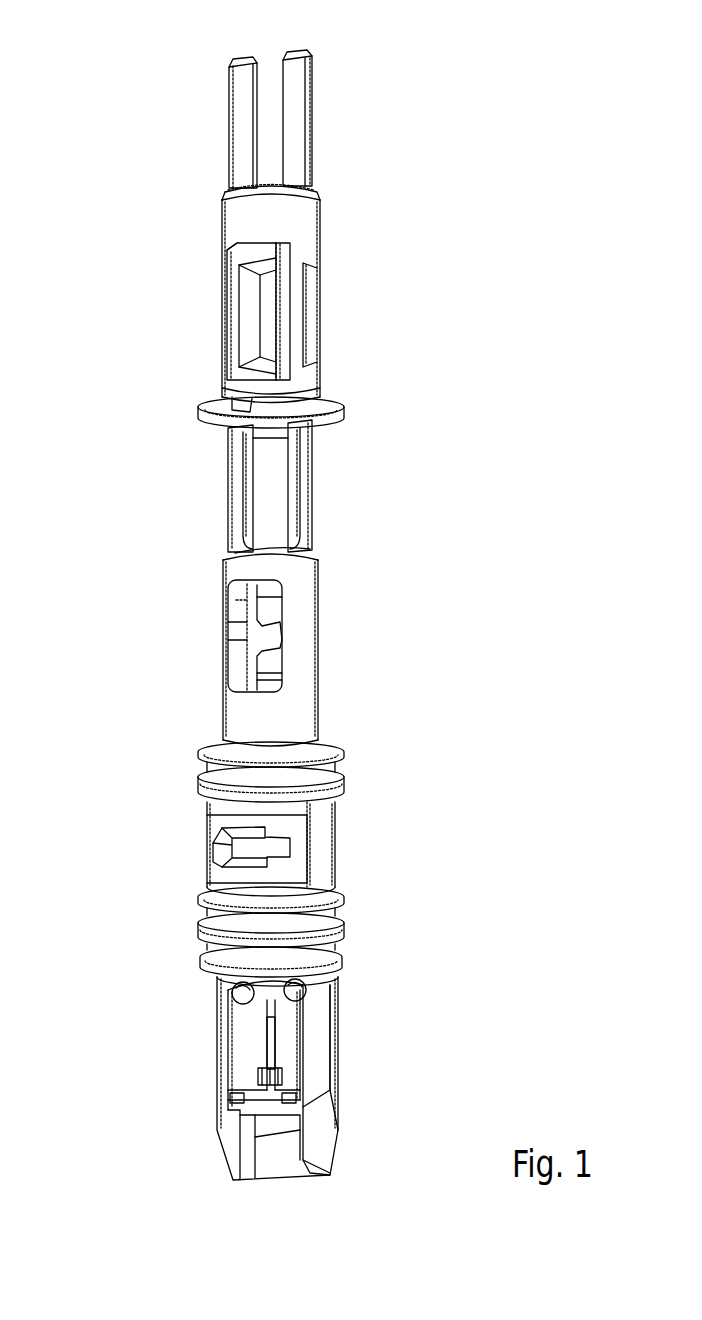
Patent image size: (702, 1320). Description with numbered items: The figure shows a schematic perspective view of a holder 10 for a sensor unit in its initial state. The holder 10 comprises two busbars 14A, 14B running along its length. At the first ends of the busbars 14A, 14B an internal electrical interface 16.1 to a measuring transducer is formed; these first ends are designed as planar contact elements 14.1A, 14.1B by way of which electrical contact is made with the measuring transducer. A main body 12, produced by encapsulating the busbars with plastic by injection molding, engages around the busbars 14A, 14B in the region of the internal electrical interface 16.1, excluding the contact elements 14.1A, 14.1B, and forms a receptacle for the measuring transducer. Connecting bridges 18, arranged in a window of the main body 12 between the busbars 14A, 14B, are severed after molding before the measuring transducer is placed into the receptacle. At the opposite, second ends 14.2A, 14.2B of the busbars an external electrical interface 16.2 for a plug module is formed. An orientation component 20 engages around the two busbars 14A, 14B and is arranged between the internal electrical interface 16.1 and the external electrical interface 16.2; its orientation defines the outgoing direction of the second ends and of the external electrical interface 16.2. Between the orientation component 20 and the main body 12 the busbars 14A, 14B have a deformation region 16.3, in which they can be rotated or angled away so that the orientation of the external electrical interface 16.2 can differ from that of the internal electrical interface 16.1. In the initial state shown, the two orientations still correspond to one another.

The holder 10 is at (95, 570).
The main body 12 is at (320, 857).
The busbar 14A is at (238, 498).
The busbar 14B is at (298, 492).
The planar contact element 14.1A is at (243, 1057).
The planar contact element 14.1B is at (292, 1027).
The contact leg 14.2A is at (240, 138).
The contact leg 14.2B is at (303, 118).
The internal electrical interface 16.1 is at (192, 1021).
The external electrical interface 16.2 is at (198, 102).
The deformation region 16.3 is at (202, 455).
The connecting bridges 18 is at (265, 622).
The orientation component 20 is at (303, 312).